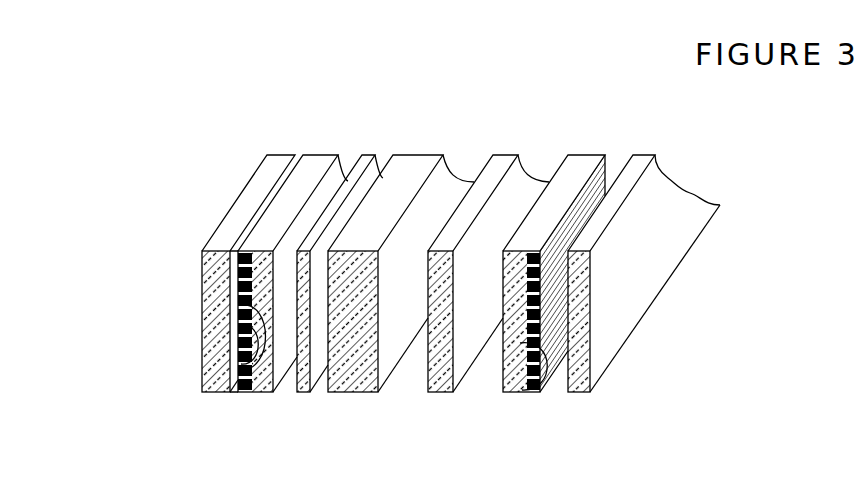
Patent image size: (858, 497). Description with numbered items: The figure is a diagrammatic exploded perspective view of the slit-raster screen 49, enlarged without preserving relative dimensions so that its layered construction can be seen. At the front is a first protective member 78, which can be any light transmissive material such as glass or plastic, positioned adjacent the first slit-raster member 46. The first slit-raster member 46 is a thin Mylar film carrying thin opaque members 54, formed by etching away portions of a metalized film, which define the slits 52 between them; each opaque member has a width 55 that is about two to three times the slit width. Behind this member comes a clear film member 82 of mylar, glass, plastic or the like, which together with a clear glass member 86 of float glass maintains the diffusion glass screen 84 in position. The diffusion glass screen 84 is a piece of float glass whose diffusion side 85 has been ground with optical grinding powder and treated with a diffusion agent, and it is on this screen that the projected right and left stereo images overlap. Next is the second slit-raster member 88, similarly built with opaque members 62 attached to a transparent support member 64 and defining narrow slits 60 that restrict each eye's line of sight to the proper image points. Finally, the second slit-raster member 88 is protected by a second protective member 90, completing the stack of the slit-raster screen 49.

The slit-raster screen 49 is at (150, 230).
The first protective member 78 is at (235, 223).
The width 55 is at (240, 268).
The first slit-raster member 46 is at (322, 156).
The slits 52 is at (242, 337).
The opaque members 54 is at (250, 378).
The clear film member 82 is at (372, 154).
The diffusion glass screen 84 is at (418, 153).
The diffusion side 85 is at (448, 176).
The clear glass member 86 is at (510, 152).
The second slit-raster member 88 is at (585, 152).
The second protective member 90 is at (645, 148).
The transparent support member 64 is at (523, 388).
The opaque members 62 is at (528, 363).
The slits 60 is at (547, 363).